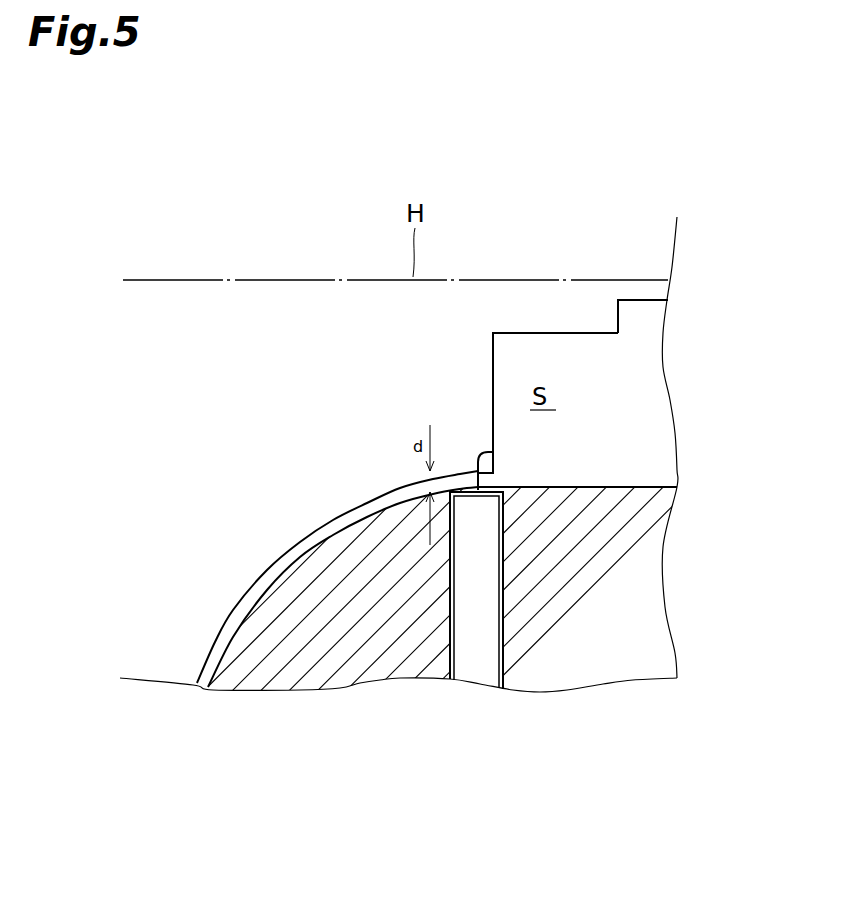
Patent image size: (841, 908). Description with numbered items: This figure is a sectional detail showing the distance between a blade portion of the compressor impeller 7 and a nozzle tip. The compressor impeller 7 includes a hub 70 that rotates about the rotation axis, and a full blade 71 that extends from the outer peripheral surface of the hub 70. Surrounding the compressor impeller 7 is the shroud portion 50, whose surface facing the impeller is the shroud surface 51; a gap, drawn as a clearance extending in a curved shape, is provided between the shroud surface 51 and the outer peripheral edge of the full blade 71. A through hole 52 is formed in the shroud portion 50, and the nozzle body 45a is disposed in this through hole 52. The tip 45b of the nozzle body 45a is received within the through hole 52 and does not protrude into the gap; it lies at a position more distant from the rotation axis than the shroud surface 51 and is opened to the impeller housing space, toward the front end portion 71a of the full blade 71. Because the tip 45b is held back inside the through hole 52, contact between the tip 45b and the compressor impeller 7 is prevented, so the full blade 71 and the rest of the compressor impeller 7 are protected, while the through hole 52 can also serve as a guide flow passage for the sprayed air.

The compressor impeller 7 is at (424, 585).
The hub 70 is at (657, 290).
The full blade 71 is at (500, 360).
The front end portion of the full blade 71a is at (478, 450).
The tip of the nozzle body 45b is at (494, 445).
The nozzle body 45a is at (480, 663).
The through hole 52 is at (490, 605).
The shroud surface 51 is at (377, 503).
The shroud portion 50 is at (375, 565).